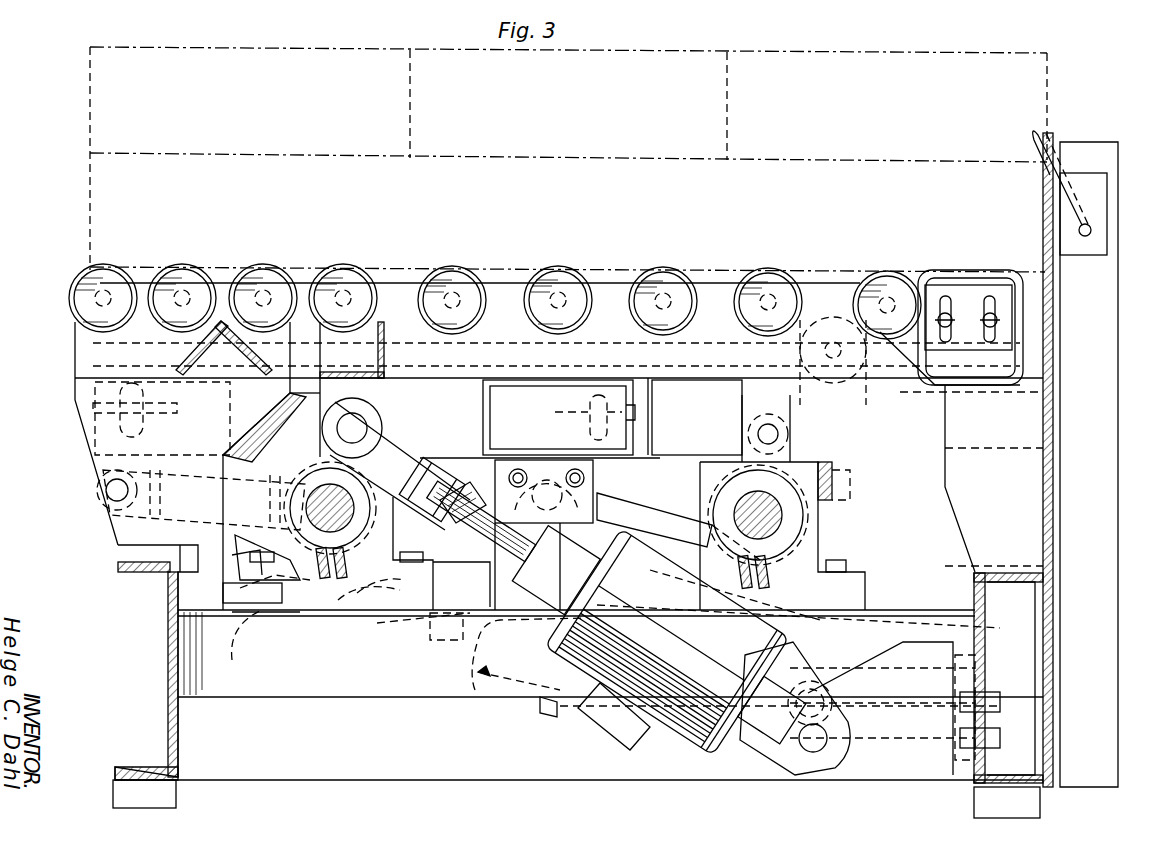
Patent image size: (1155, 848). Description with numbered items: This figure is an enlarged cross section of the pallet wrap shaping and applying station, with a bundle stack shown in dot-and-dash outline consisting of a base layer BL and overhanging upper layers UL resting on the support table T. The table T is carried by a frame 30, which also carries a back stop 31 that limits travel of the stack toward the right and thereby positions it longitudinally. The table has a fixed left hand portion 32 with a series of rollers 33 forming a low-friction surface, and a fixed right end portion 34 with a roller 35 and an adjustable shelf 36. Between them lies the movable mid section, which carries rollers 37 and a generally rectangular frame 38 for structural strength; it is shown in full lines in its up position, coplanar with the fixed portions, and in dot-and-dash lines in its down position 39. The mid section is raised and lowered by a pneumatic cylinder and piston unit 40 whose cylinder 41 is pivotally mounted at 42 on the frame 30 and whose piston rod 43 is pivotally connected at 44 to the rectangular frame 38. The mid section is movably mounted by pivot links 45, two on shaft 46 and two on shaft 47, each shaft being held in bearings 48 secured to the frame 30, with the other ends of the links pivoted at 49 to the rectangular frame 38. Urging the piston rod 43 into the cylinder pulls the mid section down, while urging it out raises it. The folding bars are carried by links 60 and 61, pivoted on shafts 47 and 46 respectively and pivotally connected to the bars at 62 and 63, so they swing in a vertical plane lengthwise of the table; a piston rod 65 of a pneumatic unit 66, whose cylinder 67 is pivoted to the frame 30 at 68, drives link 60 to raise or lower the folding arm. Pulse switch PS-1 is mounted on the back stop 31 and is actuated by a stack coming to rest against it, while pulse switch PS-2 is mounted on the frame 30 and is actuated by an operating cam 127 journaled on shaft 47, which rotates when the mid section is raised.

The upper layers UL is at (88, 92).
The base layer BL is at (88, 198).
The support table T is at (62, 346).
The frame 30 is at (168, 700).
The back stop 31 is at (1058, 284).
The left hand portion 32 is at (148, 282).
The rollers 33 is at (72, 300).
The right end portion 34 is at (940, 270).
The roller 35 is at (882, 276).
The adjustable shelf 36 is at (1025, 242).
The rollers 37 is at (364, 278).
The rectangular frame 38 is at (617, 292).
The down position 39 is at (880, 400).
The pneumatic cylinder and piston unit 40 is at (680, 748).
The cylinder 41 is at (790, 642).
The pivotal mounting 42 is at (800, 745).
The piston rod 43 is at (462, 520).
The pivotal connection 44 is at (360, 436).
The pivot links 45 is at (270, 482).
The shaft 46 is at (776, 515).
The shaft 47 is at (335, 535).
The bearings 48 is at (283, 474).
The pivotal mounting 49 is at (268, 420).
The link 60 is at (222, 520).
The link 61 is at (640, 490).
The pivot 62 is at (98, 502).
The pivot 63 is at (556, 446).
The piston rod 65 is at (456, 650).
The pneumatic unit 66 is at (458, 705).
The cylinder 67 is at (566, 706).
The pivotal connection 68 is at (830, 660).
The operating cam 127 is at (332, 622).
The pulse switch PS-1 is at (1092, 172).
The pulse switch PS-2 is at (232, 608).